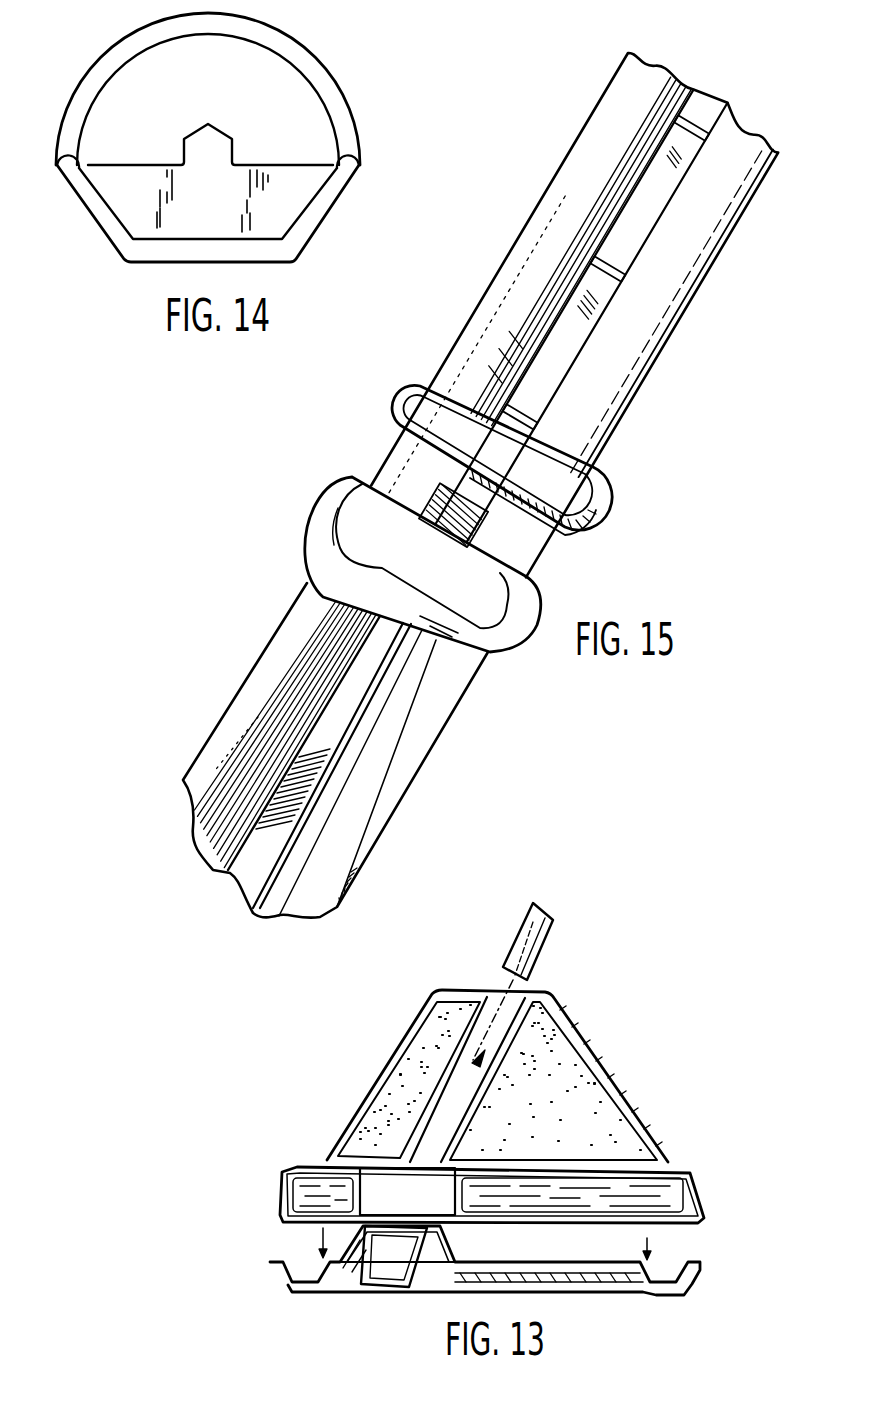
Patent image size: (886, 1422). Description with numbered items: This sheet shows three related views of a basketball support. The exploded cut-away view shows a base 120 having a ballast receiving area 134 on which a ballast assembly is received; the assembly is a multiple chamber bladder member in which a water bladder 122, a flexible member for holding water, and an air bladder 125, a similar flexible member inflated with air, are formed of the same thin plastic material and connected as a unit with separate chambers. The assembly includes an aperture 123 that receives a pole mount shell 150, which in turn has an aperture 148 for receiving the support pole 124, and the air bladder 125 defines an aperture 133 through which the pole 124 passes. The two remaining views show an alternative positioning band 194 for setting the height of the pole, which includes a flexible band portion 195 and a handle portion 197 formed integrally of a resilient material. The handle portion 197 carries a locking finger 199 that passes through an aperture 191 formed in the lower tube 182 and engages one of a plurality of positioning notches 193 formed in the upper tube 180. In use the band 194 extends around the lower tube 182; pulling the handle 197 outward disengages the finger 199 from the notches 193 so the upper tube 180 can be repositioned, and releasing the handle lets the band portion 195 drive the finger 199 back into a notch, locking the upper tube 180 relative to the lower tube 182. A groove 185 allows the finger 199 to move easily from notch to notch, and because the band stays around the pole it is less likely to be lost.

In FIG. 14, the positioning band 194 is at (338, 78).
In FIG. 14, the flexible band portion 195 is at (80, 78).
In FIG. 14, the handle portion 197 is at (137, 202).
In FIG. 15, the handle portion 197 is at (452, 678).
In FIG. 14, the locking finger 199 is at (200, 123).
In FIG. 15, the locking finger 199 is at (440, 623).
In FIG. 15, the upper tube 180 is at (667, 347).
In FIG. 15, the lower tube 182 is at (433, 750).
In FIG. 15, the groove 185 is at (560, 357).
In FIG. 15, the aperture 191 is at (378, 567).
In FIG. 15, the positioning notches 193 is at (665, 140).
In FIG. 13, the base 120 is at (693, 1290).
In FIG. 13, the water bladder 122 is at (692, 1173).
In FIG. 13, the aperture 123 is at (375, 1180).
In FIG. 13, the support pole 124 is at (550, 940).
In FIG. 13, the air bladder 125 is at (620, 1090).
In FIG. 13, the aperture 133 is at (457, 1082).
In FIG. 13, the ballast receiving area 134 is at (673, 1258).
In FIG. 13, the aperture 148 is at (397, 1255).
In FIG. 13, the pole mount shell 150 is at (430, 1263).